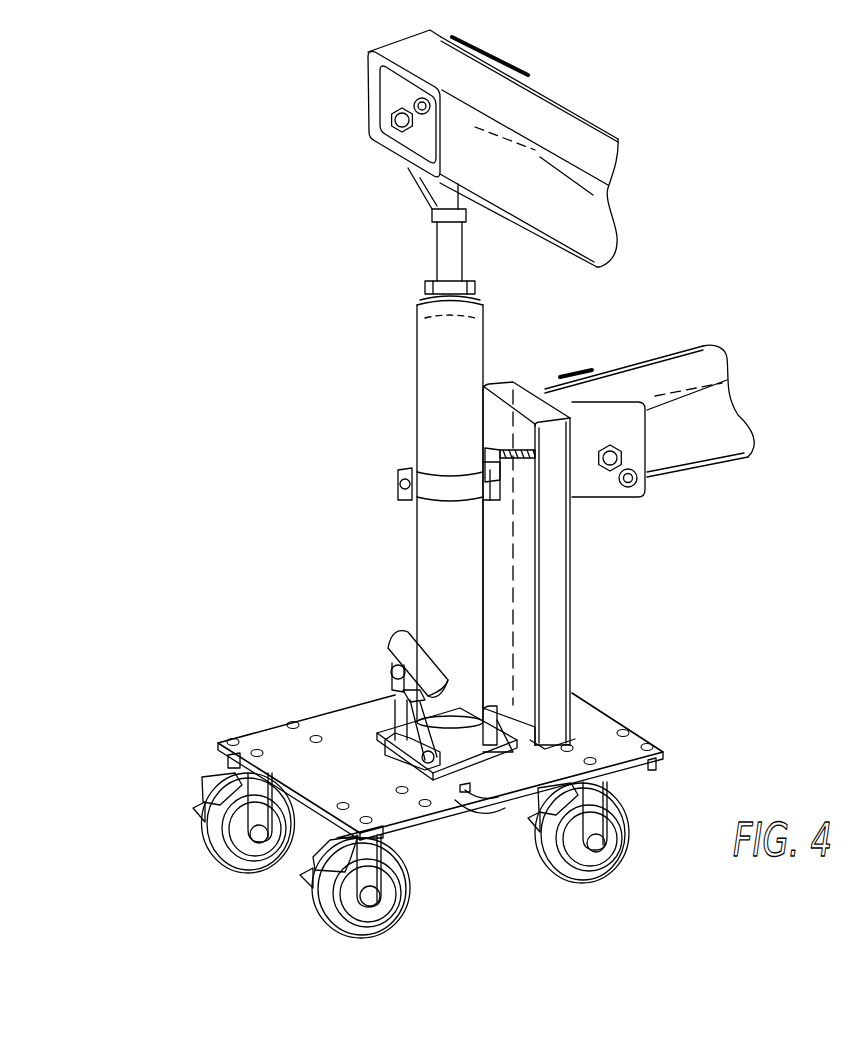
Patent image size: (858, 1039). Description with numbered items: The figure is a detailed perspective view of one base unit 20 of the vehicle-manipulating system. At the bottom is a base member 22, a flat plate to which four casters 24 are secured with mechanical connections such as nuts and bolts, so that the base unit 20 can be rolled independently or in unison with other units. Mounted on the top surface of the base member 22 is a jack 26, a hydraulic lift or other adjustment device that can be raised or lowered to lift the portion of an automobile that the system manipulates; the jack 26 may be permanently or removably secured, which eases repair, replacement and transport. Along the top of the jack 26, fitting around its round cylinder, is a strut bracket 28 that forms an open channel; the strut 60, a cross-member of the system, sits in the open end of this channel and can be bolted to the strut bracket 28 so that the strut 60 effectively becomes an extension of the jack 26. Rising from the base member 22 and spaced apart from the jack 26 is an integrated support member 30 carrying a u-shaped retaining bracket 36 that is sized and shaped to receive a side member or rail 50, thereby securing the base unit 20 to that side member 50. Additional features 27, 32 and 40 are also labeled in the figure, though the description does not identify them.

The base unit 20 is at (188, 349).
The base member 22 is at (278, 728).
The casters 24 is at (310, 903).
The jack 26 is at (430, 368).
The toggle clamp 27 is at (378, 716).
The strut bracket 28 is at (398, 143).
The support member 30 is at (552, 622).
The post base 32 is at (575, 735).
The bracket 36 is at (598, 492).
The clamp rod 40 is at (524, 445).
The side member 50 is at (675, 357).
The strut 60 is at (583, 140).